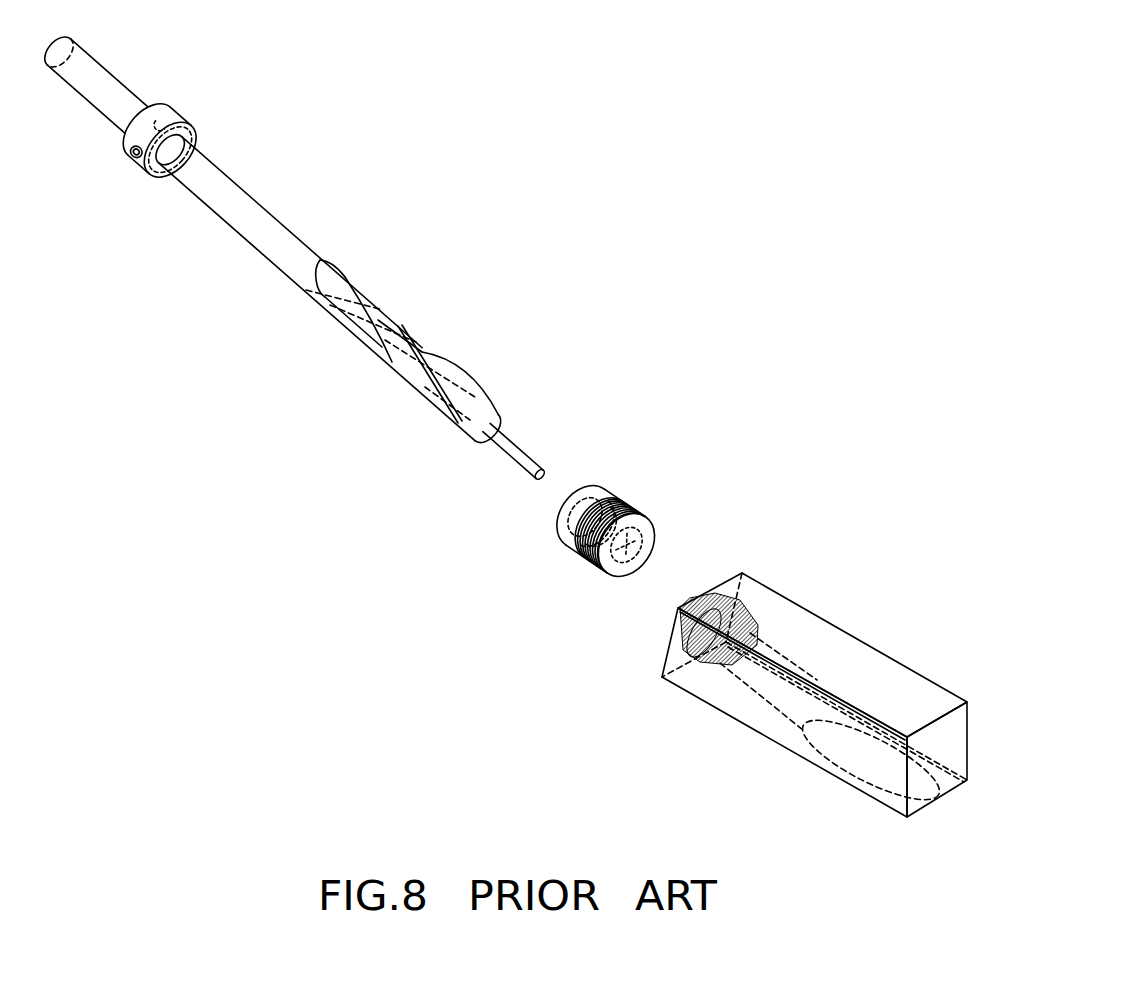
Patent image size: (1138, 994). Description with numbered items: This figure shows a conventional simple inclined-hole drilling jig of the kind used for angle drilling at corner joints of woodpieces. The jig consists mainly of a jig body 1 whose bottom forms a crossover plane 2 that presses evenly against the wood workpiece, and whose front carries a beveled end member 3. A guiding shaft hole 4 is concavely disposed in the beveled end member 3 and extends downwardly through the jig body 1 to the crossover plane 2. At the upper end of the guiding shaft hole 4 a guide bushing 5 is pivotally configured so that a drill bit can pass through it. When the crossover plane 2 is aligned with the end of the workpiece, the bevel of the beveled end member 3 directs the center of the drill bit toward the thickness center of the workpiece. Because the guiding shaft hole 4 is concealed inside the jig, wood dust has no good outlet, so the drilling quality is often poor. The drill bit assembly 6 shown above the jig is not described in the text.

The jig body 1 is at (837, 643).
The crossover plane 2 is at (940, 805).
The beveled end member 3 is at (672, 640).
The guiding shaft hole 4 is at (765, 650).
The guide bushing 5 is at (612, 495).
The drill tool 6 is at (348, 298).